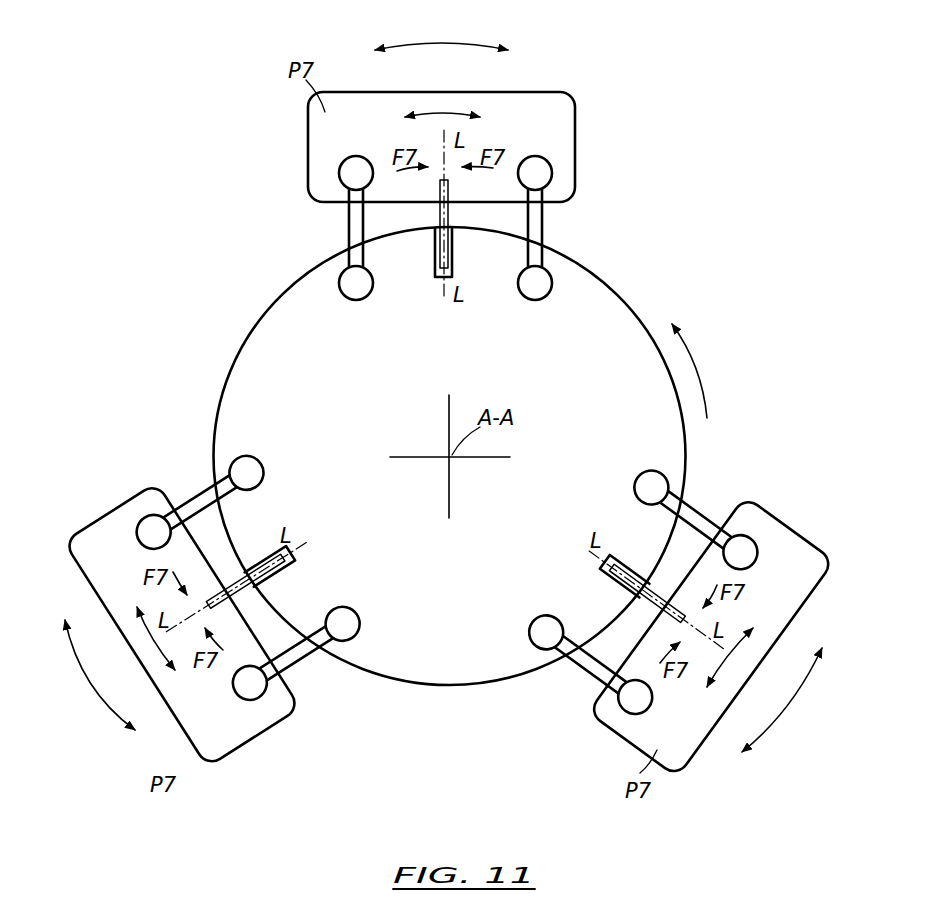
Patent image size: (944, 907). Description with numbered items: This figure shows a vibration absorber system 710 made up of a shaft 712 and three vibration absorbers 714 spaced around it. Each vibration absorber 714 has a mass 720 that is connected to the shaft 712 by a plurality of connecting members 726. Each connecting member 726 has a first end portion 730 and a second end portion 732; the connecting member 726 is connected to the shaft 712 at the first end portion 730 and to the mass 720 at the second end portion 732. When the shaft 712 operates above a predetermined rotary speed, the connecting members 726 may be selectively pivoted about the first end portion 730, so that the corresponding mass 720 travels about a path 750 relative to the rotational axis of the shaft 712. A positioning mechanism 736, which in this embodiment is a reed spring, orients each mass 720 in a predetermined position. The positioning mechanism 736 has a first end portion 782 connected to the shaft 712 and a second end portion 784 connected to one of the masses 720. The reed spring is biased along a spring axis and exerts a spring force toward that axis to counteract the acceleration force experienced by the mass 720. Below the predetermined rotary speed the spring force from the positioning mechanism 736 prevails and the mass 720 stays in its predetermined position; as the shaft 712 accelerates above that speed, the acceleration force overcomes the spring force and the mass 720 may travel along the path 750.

The vibration absorber system 710 is at (722, 74).
The shaft 712 is at (620, 293).
The vibration absorber 714 is at (612, 156).
The mass 720 is at (547, 100).
The connecting member 726 is at (535, 285).
The first end portion 730 is at (540, 256).
The second end portion 732 is at (347, 175).
The positioning mechanism 736 is at (456, 252).
The path 750 is at (458, 43).
The first end portion 782 is at (436, 266).
The second end portion 784 is at (440, 192).